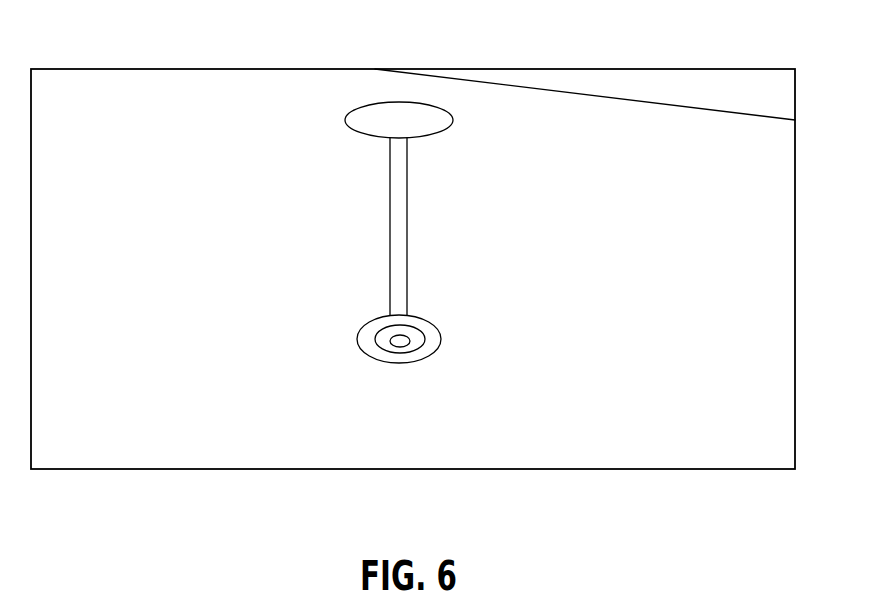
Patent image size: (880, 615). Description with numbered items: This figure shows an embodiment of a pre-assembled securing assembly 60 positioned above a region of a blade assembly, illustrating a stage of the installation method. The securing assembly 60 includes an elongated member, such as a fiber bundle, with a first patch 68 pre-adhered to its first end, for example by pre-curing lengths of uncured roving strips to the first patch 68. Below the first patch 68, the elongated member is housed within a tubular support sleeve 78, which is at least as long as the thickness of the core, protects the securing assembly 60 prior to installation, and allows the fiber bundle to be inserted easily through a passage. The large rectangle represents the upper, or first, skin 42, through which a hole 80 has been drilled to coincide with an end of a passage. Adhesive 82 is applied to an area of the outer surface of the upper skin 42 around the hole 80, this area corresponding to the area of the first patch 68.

The first skin 42 is at (775, 206).
The securing assembly 60 is at (503, 123).
The first patch 68 is at (402, 112).
The tubular support sleeve 78 is at (398, 230).
The adhesive 82 is at (352, 346).
The hole 80 is at (403, 341).